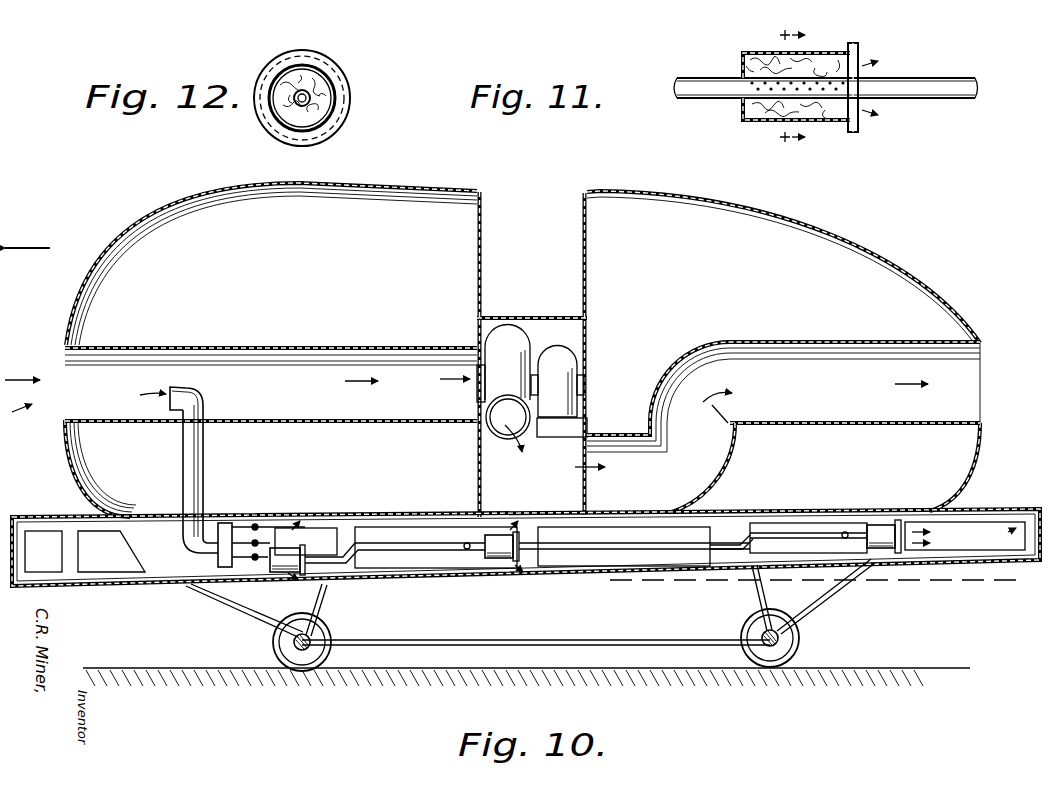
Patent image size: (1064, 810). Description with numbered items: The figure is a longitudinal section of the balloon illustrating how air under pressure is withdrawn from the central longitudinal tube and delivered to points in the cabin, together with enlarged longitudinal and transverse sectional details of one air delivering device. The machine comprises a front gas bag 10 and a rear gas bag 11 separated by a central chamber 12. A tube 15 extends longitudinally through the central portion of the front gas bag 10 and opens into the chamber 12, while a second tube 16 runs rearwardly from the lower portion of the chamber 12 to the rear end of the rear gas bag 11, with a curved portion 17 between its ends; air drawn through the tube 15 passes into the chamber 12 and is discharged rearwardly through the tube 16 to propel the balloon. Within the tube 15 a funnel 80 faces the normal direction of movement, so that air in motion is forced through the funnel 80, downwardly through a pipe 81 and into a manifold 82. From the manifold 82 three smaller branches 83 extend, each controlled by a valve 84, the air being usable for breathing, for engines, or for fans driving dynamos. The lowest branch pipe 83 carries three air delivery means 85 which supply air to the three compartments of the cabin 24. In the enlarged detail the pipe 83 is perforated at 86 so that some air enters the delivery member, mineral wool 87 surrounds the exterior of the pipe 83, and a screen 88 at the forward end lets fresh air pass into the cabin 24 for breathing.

In FIG. 10, the front gas bag 10 is at (296, 350).
In FIG. 10, the rear gas bag 11 is at (783, 351).
In FIG. 11, the central chamber 12 is at (803, 23).
In FIG. 10, the tube 15 is at (258, 357).
In FIG. 10, the second tube 16 is at (815, 358).
In FIG. 10, the curved portion 17 is at (698, 448).
In FIG. 10, the cabin 24 is at (413, 572).
In FIG. 10, the funnel 80 is at (205, 412).
In FIG. 10, the pipe 81 is at (203, 467).
In FIG. 10, the manifold 82 is at (229, 527).
In FIG. 11, the branch pipe 83 is at (699, 79).
In FIG. 10, the branch pipe 83 is at (252, 528).
In FIG. 10, the valve 84 is at (253, 559).
In FIG. 11, the air delivery means 85 is at (806, 54).
In FIG. 10, the air delivery means 85 is at (290, 571).
In FIG. 11, the perforations 86 is at (810, 97).
In FIG. 11, the mineral wool 87 is at (755, 56).
In FIG. 11, the screen 88 is at (862, 61).